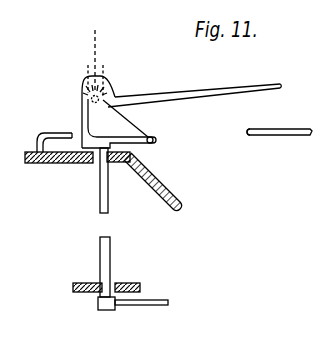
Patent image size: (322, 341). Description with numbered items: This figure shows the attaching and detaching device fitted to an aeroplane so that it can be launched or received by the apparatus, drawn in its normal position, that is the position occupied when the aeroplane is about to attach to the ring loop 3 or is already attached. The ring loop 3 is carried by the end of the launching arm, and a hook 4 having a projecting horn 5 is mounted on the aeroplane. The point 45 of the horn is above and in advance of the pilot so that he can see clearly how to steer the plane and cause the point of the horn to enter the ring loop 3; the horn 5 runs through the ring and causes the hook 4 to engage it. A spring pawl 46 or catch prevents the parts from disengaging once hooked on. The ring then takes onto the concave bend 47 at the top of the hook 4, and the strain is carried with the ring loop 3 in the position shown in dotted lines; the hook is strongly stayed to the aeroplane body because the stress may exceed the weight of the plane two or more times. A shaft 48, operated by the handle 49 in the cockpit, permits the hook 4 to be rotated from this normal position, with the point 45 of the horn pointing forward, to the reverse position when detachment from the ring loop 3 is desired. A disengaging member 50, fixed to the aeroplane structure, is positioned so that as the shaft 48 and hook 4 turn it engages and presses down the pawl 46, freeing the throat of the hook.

The ring loop 3 is at (92, 48).
The hook 4 is at (82, 106).
The horn 5 is at (229, 99).
The point of the horn 45 is at (240, 133).
The spring pawl 46 is at (143, 127).
The concave bend 47 is at (82, 96).
The shaft 48 is at (98, 202).
The handle 49 is at (155, 298).
The disengaging member 50 is at (63, 140).